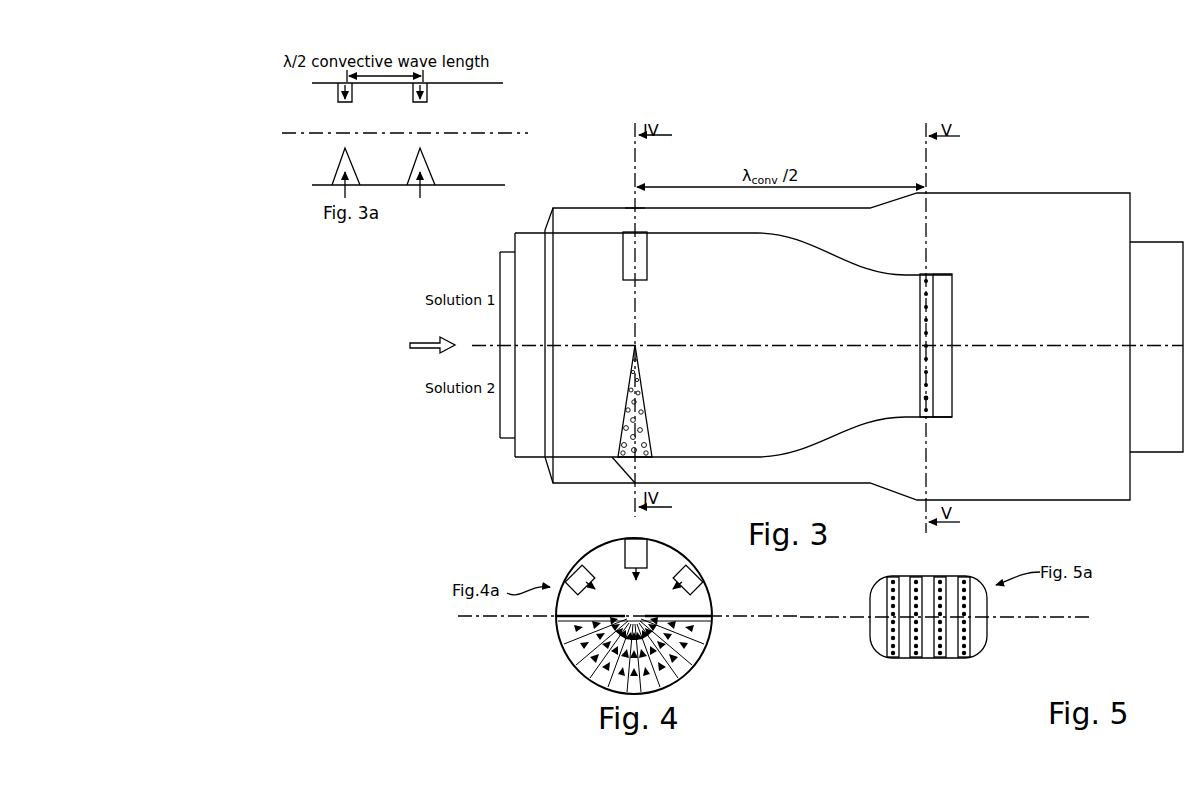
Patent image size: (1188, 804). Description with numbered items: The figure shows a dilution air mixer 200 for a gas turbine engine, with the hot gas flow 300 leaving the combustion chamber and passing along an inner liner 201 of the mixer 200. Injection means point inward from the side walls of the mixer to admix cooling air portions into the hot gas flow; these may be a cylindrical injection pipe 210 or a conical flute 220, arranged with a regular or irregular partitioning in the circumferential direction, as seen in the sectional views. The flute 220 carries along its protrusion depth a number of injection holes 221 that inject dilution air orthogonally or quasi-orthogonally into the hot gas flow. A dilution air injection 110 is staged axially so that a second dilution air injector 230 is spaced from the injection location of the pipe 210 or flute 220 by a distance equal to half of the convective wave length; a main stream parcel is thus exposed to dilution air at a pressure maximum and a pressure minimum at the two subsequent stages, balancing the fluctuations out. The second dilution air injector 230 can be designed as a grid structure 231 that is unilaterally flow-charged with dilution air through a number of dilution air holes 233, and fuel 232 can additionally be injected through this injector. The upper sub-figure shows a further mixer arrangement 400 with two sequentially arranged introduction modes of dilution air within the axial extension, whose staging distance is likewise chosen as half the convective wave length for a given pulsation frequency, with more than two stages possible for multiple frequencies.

In FIG. 3, the dilution air injection 110 is at (633, 205).
In FIG. 3, the mixing device housing 200 is at (794, 146).
In FIG. 3, the inner liner 201 is at (758, 236).
In FIG. 3, the injection pipe 210 is at (651, 272).
In FIG. 3, the flute 220 is at (655, 410).
In FIG. 3, the injection holes 221 is at (650, 428).
In FIG. 3, the second dilution air injector 230 is at (915, 308).
In FIG. 5, the second dilution air injector 230 is at (957, 650).
In FIG. 5, the grid structure 231 is at (972, 640).
In FIG. 5, the fuel 232 is at (936, 646).
In FIG. 3, the dilution air holes 233 is at (929, 398).
In FIG. 3, the hot gas flow 300 is at (423, 339).
In FIG. 3A, the mixer arrangement 400 is at (489, 113).